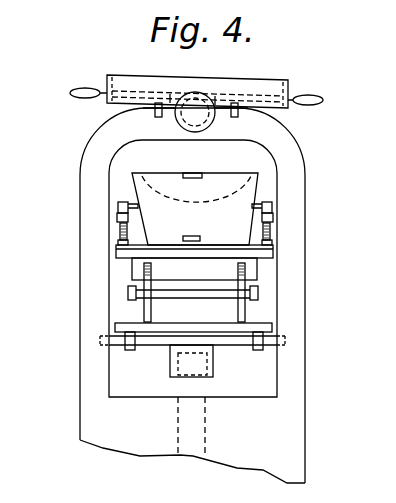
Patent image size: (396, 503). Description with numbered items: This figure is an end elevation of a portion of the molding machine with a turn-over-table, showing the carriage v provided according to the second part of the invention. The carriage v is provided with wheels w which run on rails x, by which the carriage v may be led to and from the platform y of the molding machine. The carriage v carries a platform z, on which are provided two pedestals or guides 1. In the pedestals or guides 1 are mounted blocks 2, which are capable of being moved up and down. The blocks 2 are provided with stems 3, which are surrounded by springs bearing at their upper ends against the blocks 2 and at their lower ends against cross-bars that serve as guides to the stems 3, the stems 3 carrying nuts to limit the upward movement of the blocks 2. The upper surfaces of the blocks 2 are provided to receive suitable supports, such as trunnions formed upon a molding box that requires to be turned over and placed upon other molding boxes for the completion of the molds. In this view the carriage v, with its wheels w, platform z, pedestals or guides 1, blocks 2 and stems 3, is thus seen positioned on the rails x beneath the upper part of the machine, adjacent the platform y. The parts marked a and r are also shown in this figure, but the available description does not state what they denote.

The lever bar with handles a is at (290, 93).
The hopper r is at (128, 182).
The pedestals or guides 1 is at (120, 235).
The blocks 2 is at (120, 220).
The stems 3 is at (120, 230).
The platform z is at (270, 252).
The carriage v is at (205, 272).
The wheels w is at (145, 311).
The rails x is at (193, 320).
The platform of the molding machine y is at (206, 361).